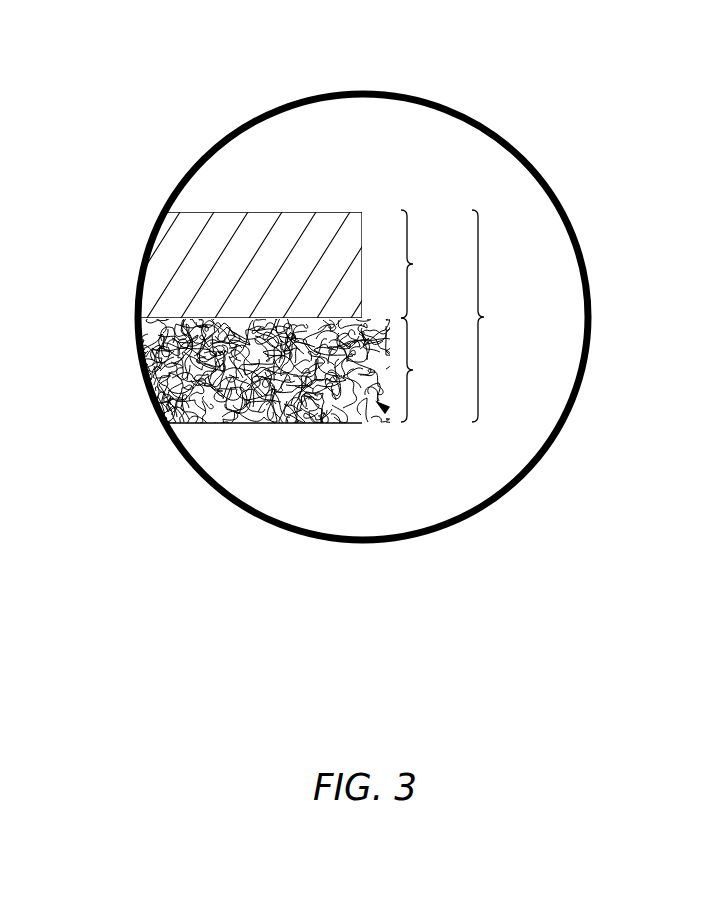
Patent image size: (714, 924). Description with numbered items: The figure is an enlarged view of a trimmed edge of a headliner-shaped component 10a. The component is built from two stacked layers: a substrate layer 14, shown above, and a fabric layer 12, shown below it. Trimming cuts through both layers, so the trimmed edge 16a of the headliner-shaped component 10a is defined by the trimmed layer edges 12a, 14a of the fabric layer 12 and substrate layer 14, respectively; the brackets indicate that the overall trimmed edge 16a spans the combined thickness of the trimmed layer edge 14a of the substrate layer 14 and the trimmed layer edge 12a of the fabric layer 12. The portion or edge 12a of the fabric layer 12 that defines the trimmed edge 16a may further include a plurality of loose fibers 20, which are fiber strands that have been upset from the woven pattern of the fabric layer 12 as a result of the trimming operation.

The headliner-shaped component 10a is at (303, 181).
The substrate layer 14 is at (183, 265).
The fabric layer 12 is at (213, 397).
The trimmed layer edge of the substrate layer 14a is at (427, 264).
The trimmed layer edge of the fabric layer 12a is at (427, 370).
The trimmed edge 16a is at (499, 316).
The loose fibers 20 is at (378, 403).